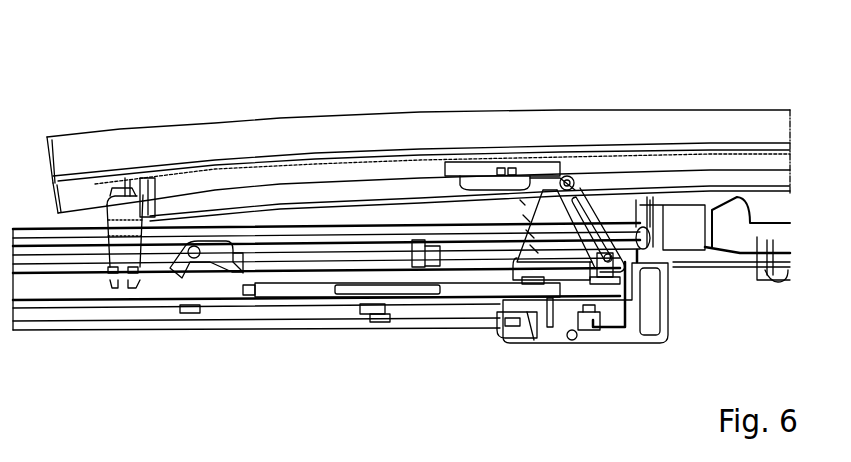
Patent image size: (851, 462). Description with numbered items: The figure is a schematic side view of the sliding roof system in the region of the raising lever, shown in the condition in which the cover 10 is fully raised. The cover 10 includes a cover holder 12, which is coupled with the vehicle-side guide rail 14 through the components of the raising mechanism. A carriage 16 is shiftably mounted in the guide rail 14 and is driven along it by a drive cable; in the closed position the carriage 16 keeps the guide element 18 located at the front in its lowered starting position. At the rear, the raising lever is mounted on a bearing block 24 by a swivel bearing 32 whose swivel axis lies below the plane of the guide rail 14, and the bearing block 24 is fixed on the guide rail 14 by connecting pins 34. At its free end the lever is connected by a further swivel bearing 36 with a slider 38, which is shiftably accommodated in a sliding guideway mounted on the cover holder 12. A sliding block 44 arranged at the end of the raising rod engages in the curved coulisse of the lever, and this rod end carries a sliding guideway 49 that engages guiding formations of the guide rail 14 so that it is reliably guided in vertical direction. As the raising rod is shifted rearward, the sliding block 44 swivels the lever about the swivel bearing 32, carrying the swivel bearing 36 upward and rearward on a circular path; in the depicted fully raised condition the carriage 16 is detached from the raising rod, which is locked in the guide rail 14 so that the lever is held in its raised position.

The cover 10 is at (340, 133).
The cover holder 12 is at (240, 172).
The guide rail 14 is at (37, 268).
The carriage 16 is at (293, 290).
The guide element 18 is at (125, 258).
The bearing block 24 is at (555, 330).
The swivel bearing 32 is at (572, 342).
The connecting pins 34 is at (598, 338).
The swivel bearing 36 is at (580, 165).
The slider 38 is at (497, 175).
The sliding block 44 is at (640, 273).
The sliding guideway 49 is at (522, 317).